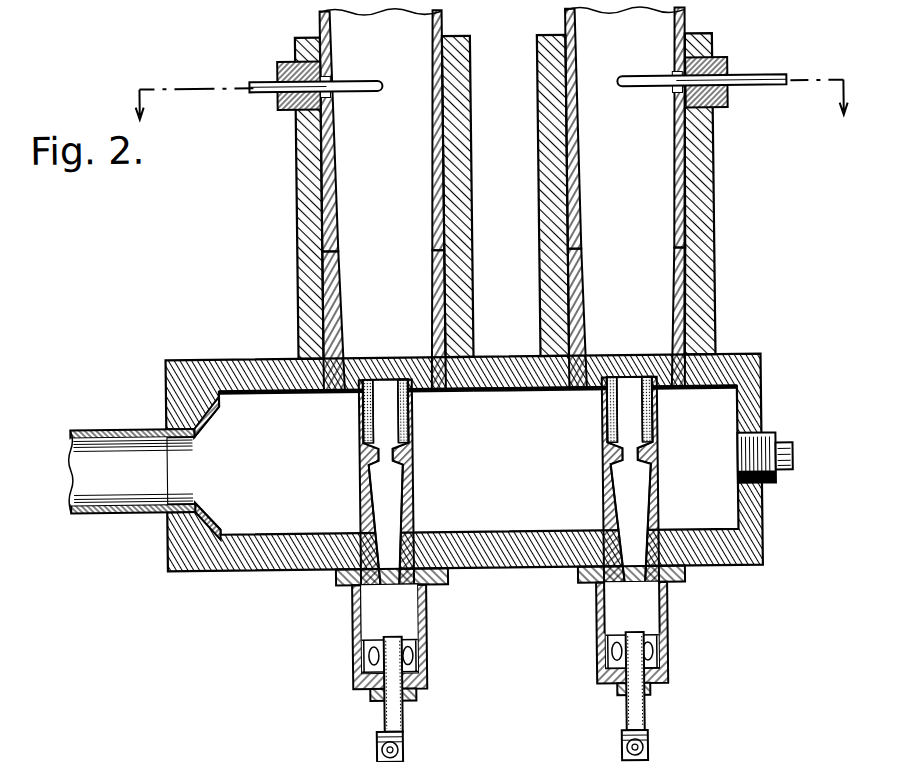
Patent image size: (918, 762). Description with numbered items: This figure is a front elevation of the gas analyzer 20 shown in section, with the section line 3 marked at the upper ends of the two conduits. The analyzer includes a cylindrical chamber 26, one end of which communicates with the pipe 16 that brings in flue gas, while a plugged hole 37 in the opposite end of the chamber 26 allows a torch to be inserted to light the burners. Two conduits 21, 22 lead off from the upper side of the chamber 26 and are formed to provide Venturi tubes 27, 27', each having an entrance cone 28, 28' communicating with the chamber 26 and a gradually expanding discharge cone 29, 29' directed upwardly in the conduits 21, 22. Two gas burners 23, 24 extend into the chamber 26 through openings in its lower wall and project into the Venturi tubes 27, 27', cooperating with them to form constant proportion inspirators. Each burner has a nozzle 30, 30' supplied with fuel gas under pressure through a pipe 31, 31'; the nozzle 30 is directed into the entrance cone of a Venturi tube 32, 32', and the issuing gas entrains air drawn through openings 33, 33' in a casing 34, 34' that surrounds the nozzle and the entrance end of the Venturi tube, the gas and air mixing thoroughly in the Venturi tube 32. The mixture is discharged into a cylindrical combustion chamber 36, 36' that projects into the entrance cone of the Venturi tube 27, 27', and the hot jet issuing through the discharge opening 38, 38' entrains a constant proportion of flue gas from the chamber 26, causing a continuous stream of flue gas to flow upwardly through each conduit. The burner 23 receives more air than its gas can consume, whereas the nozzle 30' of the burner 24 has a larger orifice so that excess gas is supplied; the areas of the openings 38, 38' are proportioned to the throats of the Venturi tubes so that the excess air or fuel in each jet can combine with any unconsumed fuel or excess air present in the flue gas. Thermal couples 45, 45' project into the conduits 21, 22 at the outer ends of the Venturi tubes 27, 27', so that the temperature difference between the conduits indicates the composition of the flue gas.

The section line 3 is at (491, 101).
The pipe 16 is at (120, 426).
The gas analyzer 20 is at (258, 358).
The conduit 21 is at (302, 206).
The conduit 22 is at (652, 212).
The gas burner 23 is at (414, 502).
The gas burner 24 is at (605, 480).
The cylindrical chamber 26 is at (267, 476).
The Venturi tube 27 is at (384, 320).
The Venturi tube 27' is at (627, 317).
The entrance cone 28 is at (346, 410).
The entrance cone 28' is at (606, 410).
The discharge cone 29 is at (382, 129).
The discharge cone 29' is at (626, 127).
The nozzle 30 is at (406, 629).
The gas nozzle 30' is at (647, 624).
The pipe 31 is at (413, 699).
The gas pipe 31' is at (657, 695).
The Venturi tube 32 is at (360, 551).
The Venturi tube 32' is at (660, 547).
The openings 33 is at (365, 657).
The openings 33' is at (606, 652).
The casing 34 is at (415, 695).
The casing 34' is at (665, 678).
The combustion chamber 36 is at (417, 411).
The combustion chamber 36' is at (663, 409).
The plugged hole 37 is at (772, 437).
The discharge opening 38 is at (387, 388).
The discharge opening 38' is at (632, 389).
The thermal couple 45 is at (318, 78).
The thermal couple 45' is at (702, 72).